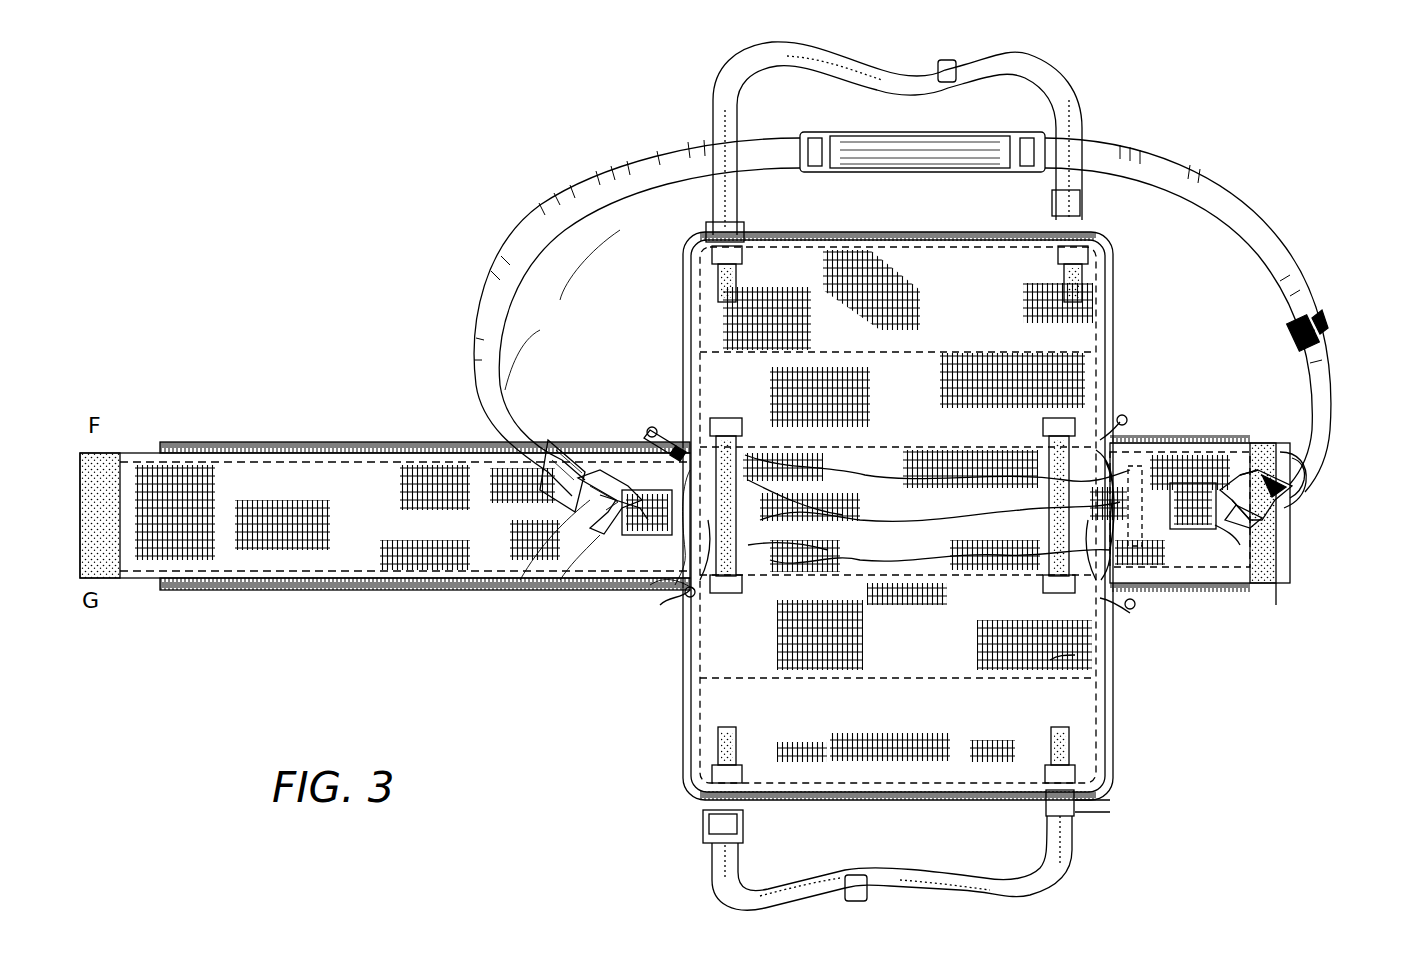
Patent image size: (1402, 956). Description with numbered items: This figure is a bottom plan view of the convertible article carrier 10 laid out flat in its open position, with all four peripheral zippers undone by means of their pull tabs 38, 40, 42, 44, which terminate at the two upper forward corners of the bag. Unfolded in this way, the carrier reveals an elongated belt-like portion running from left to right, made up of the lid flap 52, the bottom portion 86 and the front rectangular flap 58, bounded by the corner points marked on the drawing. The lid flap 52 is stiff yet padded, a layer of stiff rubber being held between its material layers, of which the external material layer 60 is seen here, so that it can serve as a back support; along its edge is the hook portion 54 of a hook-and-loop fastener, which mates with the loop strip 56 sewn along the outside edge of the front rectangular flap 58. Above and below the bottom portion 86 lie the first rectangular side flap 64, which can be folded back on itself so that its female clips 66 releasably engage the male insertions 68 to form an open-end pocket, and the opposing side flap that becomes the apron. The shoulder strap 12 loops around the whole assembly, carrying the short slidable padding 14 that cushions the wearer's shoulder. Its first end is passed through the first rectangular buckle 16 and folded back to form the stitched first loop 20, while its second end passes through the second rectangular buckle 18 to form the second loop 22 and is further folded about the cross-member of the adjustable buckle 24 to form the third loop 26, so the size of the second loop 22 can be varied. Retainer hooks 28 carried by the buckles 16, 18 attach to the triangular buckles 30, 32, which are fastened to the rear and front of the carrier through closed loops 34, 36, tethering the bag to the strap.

The convertible article carrier 10 is at (277, 283).
The shoulder strap 12 is at (920, 277).
The slidable padding 14 is at (914, 137).
The first rectangular buckle 16 is at (598, 470).
The second rectangular buckle 18 is at (1299, 503).
The first loop 20 is at (540, 453).
The second loop 22 is at (931, 502).
The adjustable buckle 24 is at (1304, 340).
The third loop 26 is at (1315, 322).
The retainer hooks 28 is at (1270, 511).
The triangular buckle 30 is at (609, 534).
The triangular buckle 32 is at (1266, 538).
The closed loop 34 is at (655, 535).
The closed loop 36 is at (1201, 474).
The pull tab 38 is at (688, 590).
The pull tab 40 is at (1131, 594).
The pull tab 42 is at (652, 446).
The pull tab 44 is at (1120, 428).
The lid flap 52 is at (385, 525).
The hook portion 54 is at (114, 576).
The loop strip 56 is at (1262, 585).
The front rectangular flap 58 is at (1322, 468).
The external material layer 60 is at (385, 531).
The first rectangular side flap 64 is at (889, 516).
The female clips 66 is at (712, 256).
The male insertions 68 is at (740, 232).
The bottom portion 86 is at (912, 502).